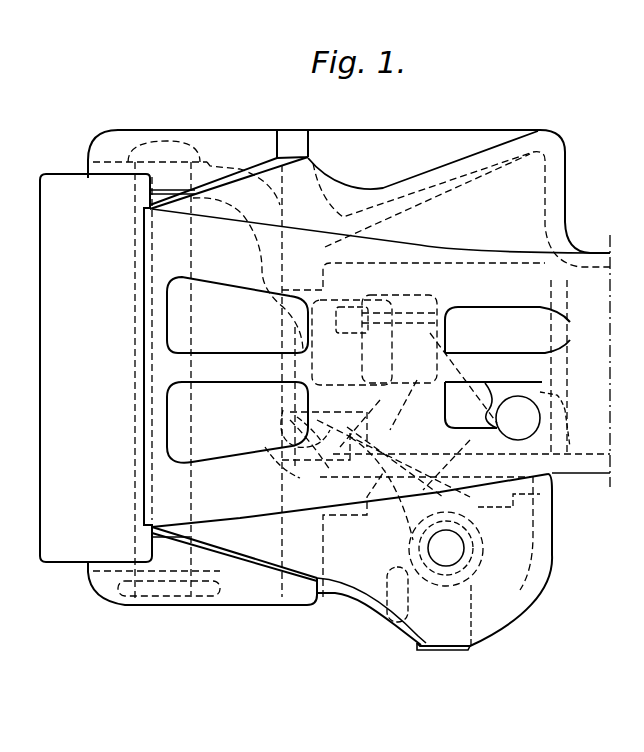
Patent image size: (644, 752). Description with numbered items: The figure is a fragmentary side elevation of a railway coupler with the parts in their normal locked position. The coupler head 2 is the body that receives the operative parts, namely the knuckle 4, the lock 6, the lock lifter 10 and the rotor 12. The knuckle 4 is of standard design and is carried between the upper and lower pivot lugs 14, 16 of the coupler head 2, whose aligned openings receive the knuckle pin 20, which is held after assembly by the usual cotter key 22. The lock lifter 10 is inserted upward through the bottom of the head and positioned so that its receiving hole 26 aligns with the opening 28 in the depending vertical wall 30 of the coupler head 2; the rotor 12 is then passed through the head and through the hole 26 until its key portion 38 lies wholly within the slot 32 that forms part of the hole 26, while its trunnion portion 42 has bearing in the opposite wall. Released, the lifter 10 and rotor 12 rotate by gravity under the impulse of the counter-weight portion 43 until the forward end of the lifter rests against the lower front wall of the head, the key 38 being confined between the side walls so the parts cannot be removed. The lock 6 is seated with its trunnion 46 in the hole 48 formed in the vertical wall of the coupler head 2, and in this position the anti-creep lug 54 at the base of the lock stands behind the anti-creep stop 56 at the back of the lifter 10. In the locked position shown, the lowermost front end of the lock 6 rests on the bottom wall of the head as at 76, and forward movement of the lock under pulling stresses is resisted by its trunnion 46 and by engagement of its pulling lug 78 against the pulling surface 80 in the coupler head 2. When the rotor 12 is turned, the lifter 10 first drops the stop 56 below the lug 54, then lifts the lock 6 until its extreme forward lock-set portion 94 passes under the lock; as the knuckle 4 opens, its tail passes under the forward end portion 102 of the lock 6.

The coupler head 2 is at (553, 138).
The knuckle 4 is at (48, 427).
The lock 6 is at (297, 393).
The lock lifter 10 is at (380, 527).
The rotor 12 is at (390, 623).
The upper pivot lug 14 is at (128, 137).
The lower pivot lug 16 is at (104, 597).
The knuckle pin 20 is at (167, 150).
The cotter key 22 is at (207, 592).
The receiving hole 26 is at (533, 607).
The opening 28 is at (458, 558).
The depending vertical wall 30 is at (513, 553).
The slot 32 is at (471, 652).
The key portion 38 is at (427, 615).
The rest point on lower front wall 42 is at (282, 487).
The counter-weight portion 43 is at (429, 652).
The trunnion 46 is at (530, 428).
The hole 48 is at (535, 418).
The anti-creep lug 54 is at (543, 503).
The anti-creep stop 56 is at (533, 531).
The bottom wall rest point 76 is at (265, 447).
The pulling lug 78 is at (386, 339).
The pulling surface 80 is at (396, 356).
The lock-set portion 94 is at (297, 417).
The forward end portion of the lock 102 is at (283, 427).